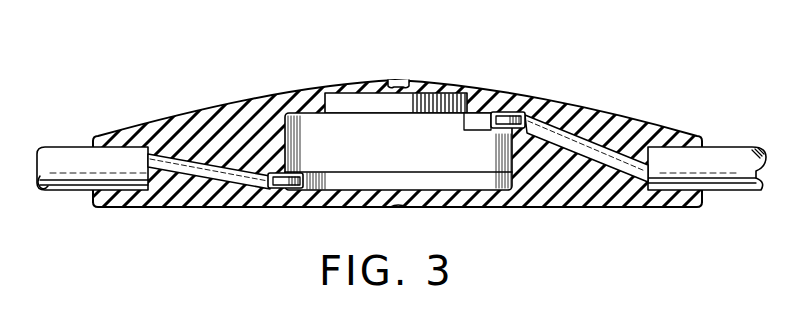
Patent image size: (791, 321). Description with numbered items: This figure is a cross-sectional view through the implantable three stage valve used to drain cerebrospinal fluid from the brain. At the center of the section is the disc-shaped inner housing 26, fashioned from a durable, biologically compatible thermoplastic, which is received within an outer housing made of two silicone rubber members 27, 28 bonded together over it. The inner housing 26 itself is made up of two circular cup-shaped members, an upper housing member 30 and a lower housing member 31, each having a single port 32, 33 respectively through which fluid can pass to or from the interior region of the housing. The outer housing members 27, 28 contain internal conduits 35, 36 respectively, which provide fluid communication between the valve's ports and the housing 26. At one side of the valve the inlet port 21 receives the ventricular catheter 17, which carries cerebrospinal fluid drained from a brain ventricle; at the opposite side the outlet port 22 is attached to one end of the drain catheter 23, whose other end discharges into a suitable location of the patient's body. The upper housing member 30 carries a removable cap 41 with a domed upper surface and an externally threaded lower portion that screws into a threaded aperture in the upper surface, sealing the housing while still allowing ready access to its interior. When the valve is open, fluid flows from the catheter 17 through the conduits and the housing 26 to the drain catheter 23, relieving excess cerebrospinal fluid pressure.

The ventricular catheter 17 is at (734, 155).
The inlet port 21 is at (686, 133).
The outlet port 22 is at (117, 133).
The drain catheter 23 is at (62, 153).
The inner housing 26 is at (377, 156).
The outer housing member 27 is at (580, 193).
The outer housing member 28 is at (219, 199).
The upper housing member 30 is at (447, 78).
The lower housing member 31 is at (453, 178).
The port 32 is at (520, 110).
The port 33 is at (280, 187).
The internal conduit 35 is at (600, 152).
The internal conduit 36 is at (190, 172).
The removable cap 41 is at (355, 70).